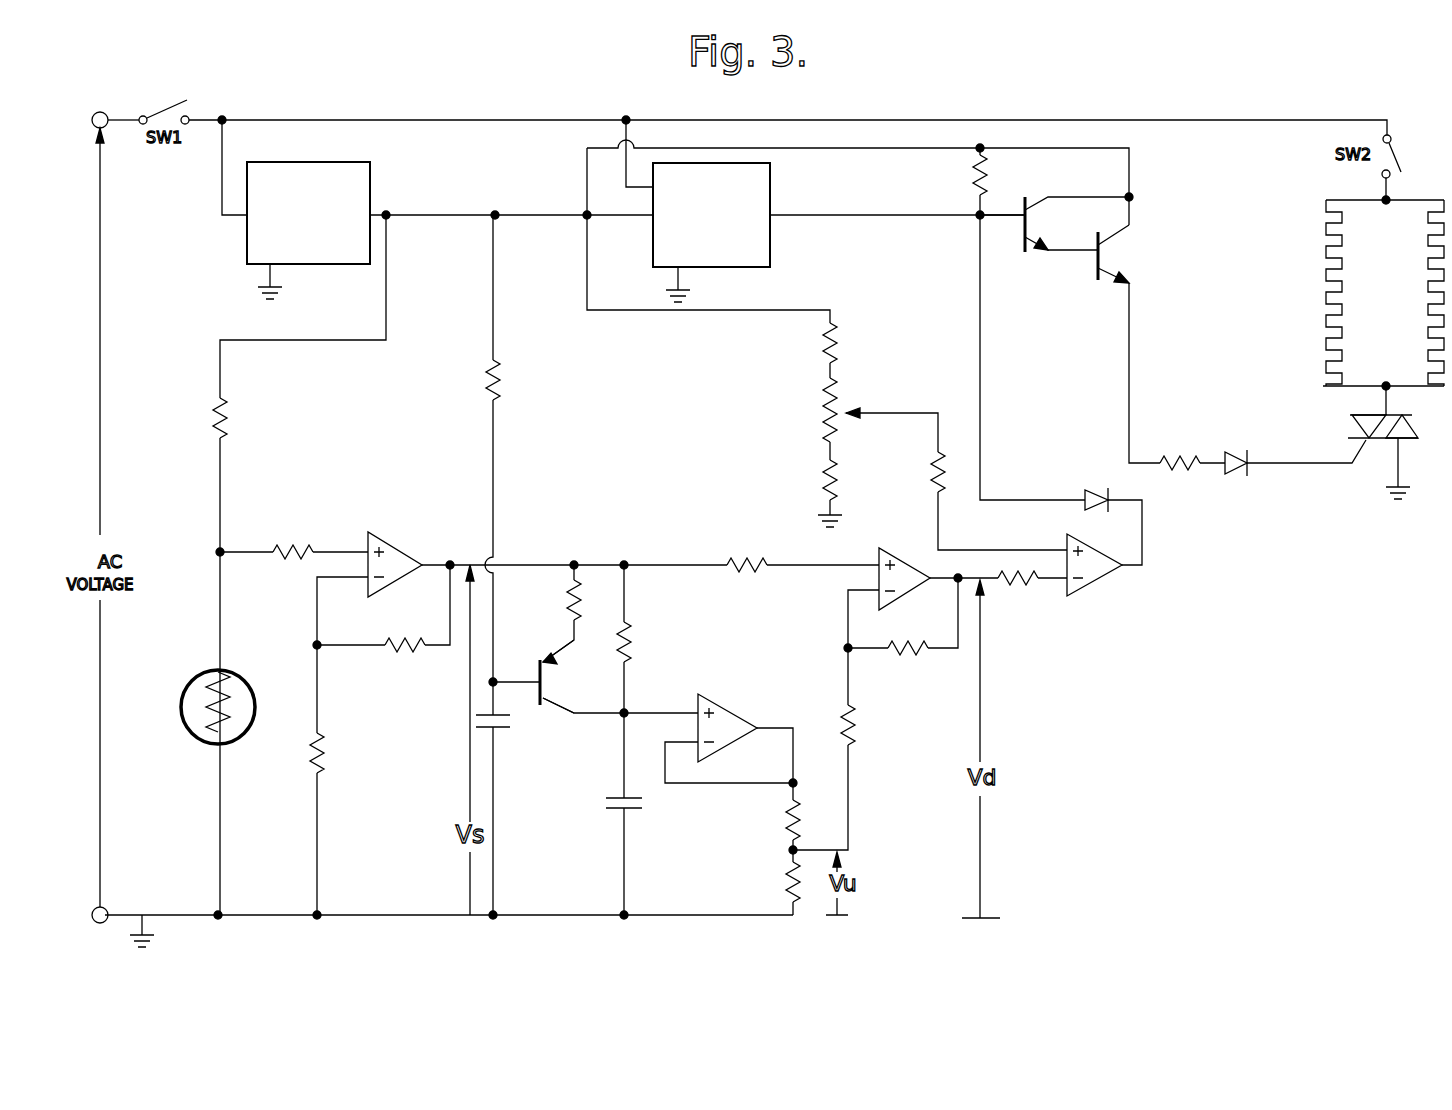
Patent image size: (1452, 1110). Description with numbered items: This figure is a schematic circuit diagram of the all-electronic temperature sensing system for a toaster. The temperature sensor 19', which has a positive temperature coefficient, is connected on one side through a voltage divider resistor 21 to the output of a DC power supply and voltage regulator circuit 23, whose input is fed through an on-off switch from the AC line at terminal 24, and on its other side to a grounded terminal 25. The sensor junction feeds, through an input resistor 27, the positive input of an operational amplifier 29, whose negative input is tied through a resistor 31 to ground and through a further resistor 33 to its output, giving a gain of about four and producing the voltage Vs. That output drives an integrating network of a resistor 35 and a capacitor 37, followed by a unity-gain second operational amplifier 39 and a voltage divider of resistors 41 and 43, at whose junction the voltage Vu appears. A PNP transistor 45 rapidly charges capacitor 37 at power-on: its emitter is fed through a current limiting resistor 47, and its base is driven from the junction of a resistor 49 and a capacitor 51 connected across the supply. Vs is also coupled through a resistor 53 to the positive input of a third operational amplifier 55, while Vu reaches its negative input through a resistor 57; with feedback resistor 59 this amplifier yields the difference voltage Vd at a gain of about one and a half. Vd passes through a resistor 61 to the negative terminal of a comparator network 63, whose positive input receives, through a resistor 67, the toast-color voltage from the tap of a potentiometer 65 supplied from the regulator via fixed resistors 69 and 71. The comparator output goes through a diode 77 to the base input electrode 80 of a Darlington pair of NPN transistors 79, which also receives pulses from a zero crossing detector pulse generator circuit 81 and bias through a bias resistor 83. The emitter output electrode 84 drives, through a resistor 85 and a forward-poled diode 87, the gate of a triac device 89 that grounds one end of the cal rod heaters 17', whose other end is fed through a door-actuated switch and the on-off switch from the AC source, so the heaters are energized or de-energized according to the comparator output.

The cal rod heaters 17' is at (1383, 293).
The temperature sensor 19' is at (202, 687).
The voltage divider resistor 21 is at (235, 406).
The DC power supply and voltage regulator circuit 23 is at (374, 163).
The terminal 24 is at (106, 112).
The grounded terminal 25 is at (107, 907).
The input resistor 27 is at (290, 545).
The operational amplifier 29 is at (394, 546).
The resistor 31 is at (335, 756).
The resistor 33 is at (393, 660).
The resistor 35 is at (638, 636).
The capacitor 37 is at (610, 804).
The second operational amplifier 39 is at (735, 714).
The resistor 41 is at (780, 819).
The resistor 43 is at (780, 881).
The PNP transistor 45 is at (549, 686).
The current limiting resistor 47 is at (566, 594).
The resistor 49 is at (482, 374).
The capacitor 51 is at (508, 724).
The resistor 53 is at (732, 553).
The third operational amplifier 55 is at (900, 553).
The resistor 57 is at (858, 735).
The resistor 59 is at (906, 660).
The resistor 61 is at (1018, 588).
The comparator network 63 is at (1112, 580).
The potentiometer 65 is at (820, 398).
The resistor 67 is at (930, 463).
The fixed resistor 69 is at (840, 335).
The fixed resistor 71 is at (815, 477).
The diode 77 is at (1093, 488).
The pair of NPN transistors 79 is at (1080, 258).
The base input electrode 80 is at (992, 220).
The zero crossing detector pulse generator circuit 81 is at (775, 186).
The bias resistor 83 is at (972, 180).
The emitter output electrode 84 is at (1115, 270).
The resistor 85 is at (1168, 458).
The diode 87 is at (1237, 455).
The triac device 89 is at (1405, 432).